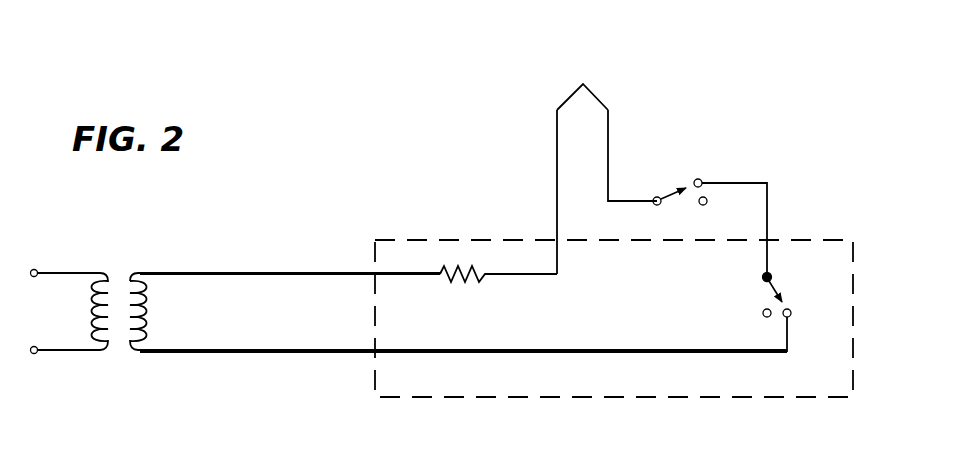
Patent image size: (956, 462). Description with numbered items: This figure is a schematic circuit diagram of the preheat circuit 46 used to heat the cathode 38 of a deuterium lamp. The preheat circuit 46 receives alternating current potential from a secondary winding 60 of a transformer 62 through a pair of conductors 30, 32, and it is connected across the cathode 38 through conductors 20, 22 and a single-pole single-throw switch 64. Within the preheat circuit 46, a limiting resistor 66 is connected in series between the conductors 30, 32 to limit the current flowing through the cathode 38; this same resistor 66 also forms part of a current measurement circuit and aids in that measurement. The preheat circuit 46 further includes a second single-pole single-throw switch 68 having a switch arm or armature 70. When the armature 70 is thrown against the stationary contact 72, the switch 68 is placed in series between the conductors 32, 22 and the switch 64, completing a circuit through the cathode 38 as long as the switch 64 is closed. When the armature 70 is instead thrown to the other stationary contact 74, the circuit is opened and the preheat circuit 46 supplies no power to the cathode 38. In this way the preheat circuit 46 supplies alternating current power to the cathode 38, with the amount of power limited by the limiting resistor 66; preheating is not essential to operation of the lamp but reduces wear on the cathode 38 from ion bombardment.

The conductor 20 is at (557, 150).
The conductor 22 is at (608, 160).
The conductor 30 is at (336, 273).
The conductor 32 is at (300, 353).
The cathode 38 is at (598, 102).
The preheat circuit 46 is at (710, 375).
The secondary winding 60 is at (140, 282).
The transformer 62 is at (117, 358).
The single-pole single-throw switch 64 is at (700, 176).
The limiting resistor 66 is at (476, 282).
The single-pole single-throw switch 68 is at (758, 296).
The switch arm 70 is at (774, 285).
The stationary contact 72 is at (792, 314).
The stationary contact 74 is at (764, 317).